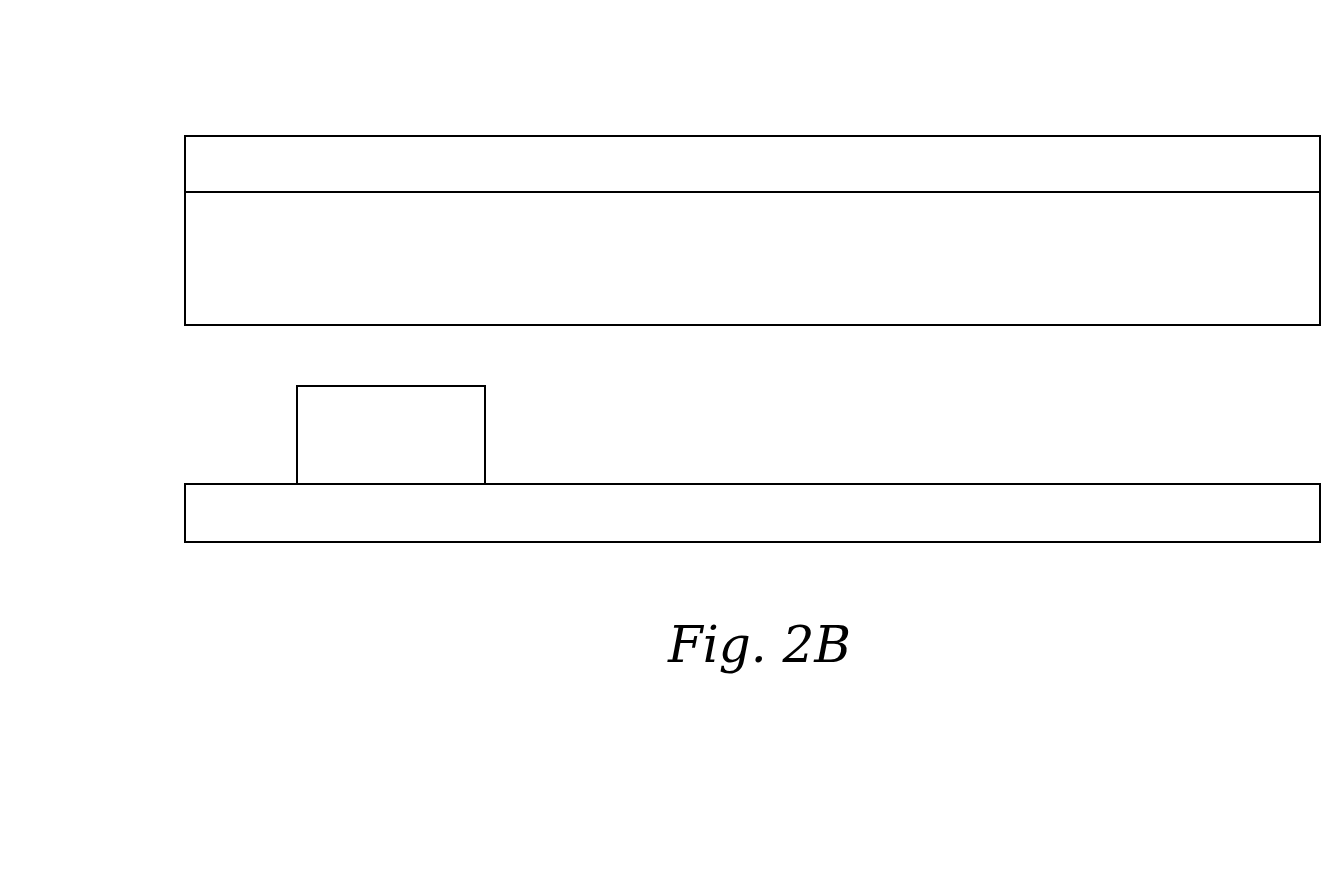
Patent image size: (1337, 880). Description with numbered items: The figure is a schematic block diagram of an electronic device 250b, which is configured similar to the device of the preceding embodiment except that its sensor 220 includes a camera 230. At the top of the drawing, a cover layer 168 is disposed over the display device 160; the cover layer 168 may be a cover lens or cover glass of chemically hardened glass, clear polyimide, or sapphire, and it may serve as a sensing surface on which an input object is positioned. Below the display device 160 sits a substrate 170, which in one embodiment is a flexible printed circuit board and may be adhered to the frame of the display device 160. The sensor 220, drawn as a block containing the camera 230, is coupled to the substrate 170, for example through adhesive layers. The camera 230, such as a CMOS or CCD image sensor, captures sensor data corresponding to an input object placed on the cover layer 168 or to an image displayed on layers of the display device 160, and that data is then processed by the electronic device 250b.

The electronic device 250b is at (228, 77).
The cover layer 168 is at (194, 163).
The display device 160 is at (194, 253).
The sensor 220 is at (278, 421).
The camera 230 is at (413, 449).
The substrate 170 is at (194, 513).